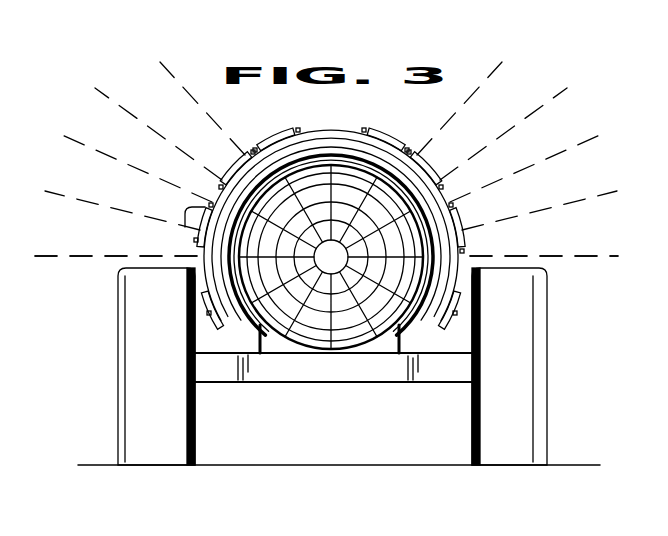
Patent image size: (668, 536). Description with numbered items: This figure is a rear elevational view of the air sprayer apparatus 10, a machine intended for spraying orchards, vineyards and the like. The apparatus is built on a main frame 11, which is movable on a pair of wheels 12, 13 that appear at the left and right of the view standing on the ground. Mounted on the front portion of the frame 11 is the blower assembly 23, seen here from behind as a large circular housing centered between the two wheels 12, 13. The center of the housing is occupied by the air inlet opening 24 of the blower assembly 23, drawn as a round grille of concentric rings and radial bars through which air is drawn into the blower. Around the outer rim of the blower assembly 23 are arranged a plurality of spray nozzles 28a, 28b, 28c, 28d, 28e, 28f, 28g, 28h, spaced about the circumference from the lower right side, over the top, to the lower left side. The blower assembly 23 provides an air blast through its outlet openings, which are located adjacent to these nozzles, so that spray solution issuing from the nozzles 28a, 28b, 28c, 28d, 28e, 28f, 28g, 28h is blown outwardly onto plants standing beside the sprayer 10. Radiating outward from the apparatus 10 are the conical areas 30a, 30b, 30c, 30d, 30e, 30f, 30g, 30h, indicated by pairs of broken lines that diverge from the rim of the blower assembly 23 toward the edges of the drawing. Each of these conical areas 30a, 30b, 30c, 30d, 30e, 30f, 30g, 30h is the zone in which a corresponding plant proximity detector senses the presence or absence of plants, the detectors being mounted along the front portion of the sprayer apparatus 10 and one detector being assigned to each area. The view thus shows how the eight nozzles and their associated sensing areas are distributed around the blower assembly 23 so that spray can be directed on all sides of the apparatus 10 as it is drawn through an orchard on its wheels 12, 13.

The air sprayer apparatus 10 is at (563, 266).
The main frame 11 is at (305, 376).
The wheel 12 is at (547, 420).
The wheel 13 is at (133, 417).
The blower assembly 23 is at (362, 352).
The air inlet opening 24 is at (300, 328).
The spray nozzle 28a is at (405, 147).
The spray nozzle 28b is at (442, 186).
The spray nozzle 28c is at (464, 248).
The spray nozzle 28d is at (457, 313).
The spray nozzle 28e is at (296, 132).
The spray nozzle 28f is at (250, 152).
The spray nozzle 28g is at (194, 240).
The spray nozzle 28h is at (207, 312).
The conical area 30a is at (542, 105).
The conical area 30b is at (585, 142).
The conical area 30c is at (609, 189).
The conical area 30d is at (612, 245).
The conical area 30e is at (170, 105).
The conical area 30f is at (142, 145).
The conical area 30g is at (134, 194).
The conical area 30h is at (104, 242).